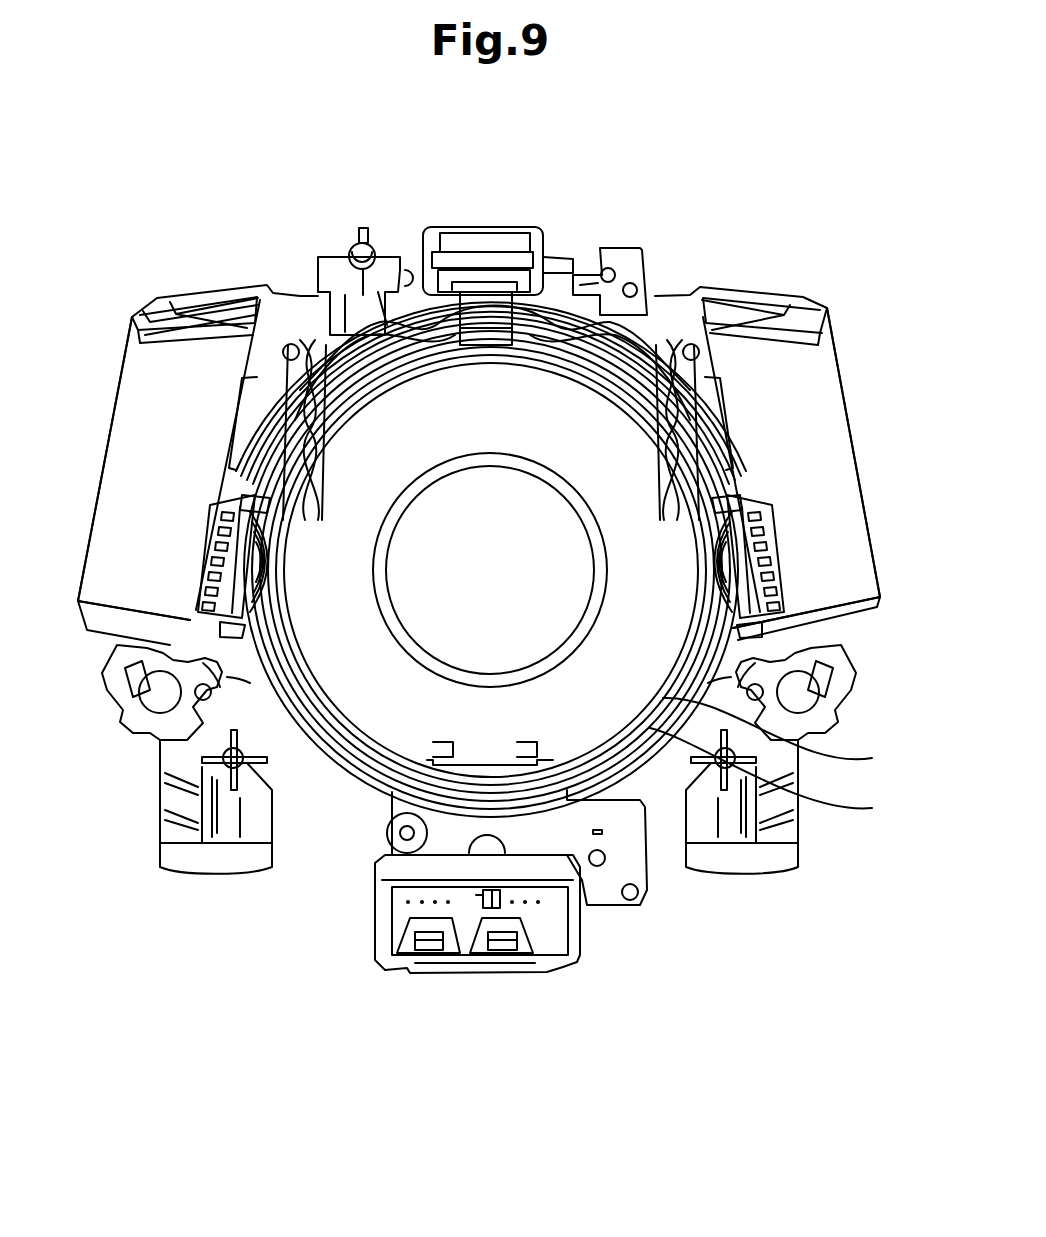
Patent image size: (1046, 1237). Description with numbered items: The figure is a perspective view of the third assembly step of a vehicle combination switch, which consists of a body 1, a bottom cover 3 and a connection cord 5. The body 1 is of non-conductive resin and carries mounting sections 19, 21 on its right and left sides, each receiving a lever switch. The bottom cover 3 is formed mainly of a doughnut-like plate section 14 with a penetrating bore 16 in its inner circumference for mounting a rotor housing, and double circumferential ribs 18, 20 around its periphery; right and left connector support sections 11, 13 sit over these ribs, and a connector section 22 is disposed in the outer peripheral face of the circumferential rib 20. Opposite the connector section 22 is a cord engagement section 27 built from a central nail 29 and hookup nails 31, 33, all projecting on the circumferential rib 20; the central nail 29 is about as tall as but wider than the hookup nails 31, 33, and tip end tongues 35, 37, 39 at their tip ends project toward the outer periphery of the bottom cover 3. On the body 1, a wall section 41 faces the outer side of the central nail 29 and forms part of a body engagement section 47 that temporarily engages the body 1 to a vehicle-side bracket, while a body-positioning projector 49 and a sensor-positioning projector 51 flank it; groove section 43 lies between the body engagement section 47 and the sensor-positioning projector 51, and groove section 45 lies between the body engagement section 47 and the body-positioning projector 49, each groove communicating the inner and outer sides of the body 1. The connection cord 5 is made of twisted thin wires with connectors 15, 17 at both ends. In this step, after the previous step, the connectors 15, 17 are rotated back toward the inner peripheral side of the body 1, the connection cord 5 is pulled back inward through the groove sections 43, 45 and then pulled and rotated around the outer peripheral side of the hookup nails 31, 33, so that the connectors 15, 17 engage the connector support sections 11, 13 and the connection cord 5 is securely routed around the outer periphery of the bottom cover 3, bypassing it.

The body 1 is at (152, 305).
The bottom cover 3 is at (607, 456).
The connection cord 5 is at (700, 416).
The connector support section 11 is at (786, 643).
The connector support section 13 is at (243, 497).
The doughnut-like plate section 14 is at (640, 662).
The connector 15 is at (785, 523).
The penetrating bore 16 is at (562, 656).
The connector 17 is at (210, 508).
The circumferential rib 18 is at (788, 739).
The mounting section 19 is at (795, 447).
The circumferential rib 20 is at (781, 781).
The mounting section 21 is at (163, 547).
The connector section 22 is at (490, 975).
The cord engagement section 27 is at (484, 310).
The central nail 29 is at (560, 262).
The hookup nail 31 is at (645, 342).
The hookup nail 33 is at (143, 313).
The tip end tongue 35 is at (435, 255).
The tip end tongue 37 is at (683, 348).
The tip end tongue 39 is at (293, 333).
The wall section 41 is at (470, 270).
The groove section 43 is at (590, 270).
The groove section 45 is at (405, 258).
The body engagement section 47 is at (505, 240).
The body-positioning projector 49 is at (349, 250).
The sensor-positioning projector 51 is at (640, 255).